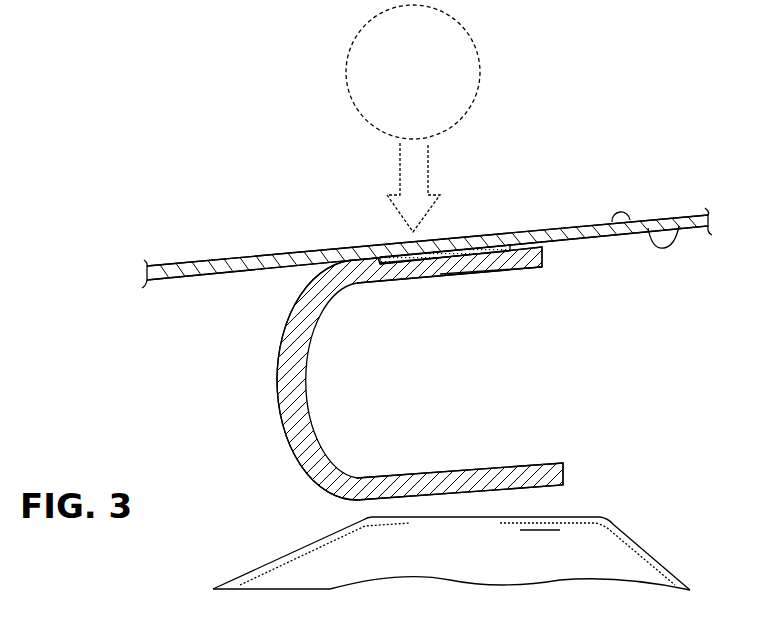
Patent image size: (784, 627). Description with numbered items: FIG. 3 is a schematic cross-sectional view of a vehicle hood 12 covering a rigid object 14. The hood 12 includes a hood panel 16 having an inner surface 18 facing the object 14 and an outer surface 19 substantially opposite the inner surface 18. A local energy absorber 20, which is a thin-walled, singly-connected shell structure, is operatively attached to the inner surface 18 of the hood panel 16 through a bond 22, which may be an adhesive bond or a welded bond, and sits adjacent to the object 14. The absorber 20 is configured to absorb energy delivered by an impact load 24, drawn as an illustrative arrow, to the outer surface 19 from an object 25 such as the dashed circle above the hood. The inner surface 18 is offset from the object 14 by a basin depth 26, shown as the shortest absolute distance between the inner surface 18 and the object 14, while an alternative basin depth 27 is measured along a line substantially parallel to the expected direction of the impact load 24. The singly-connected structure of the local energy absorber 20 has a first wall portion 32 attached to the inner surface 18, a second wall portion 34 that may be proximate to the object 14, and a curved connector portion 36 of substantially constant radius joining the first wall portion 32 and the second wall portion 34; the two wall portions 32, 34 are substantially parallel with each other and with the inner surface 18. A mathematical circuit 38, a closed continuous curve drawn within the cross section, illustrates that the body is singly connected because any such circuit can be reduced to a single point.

The vehicle hood 12 is at (200, 216).
The object 14 is at (498, 563).
The hood panel 16 is at (575, 222).
The inner surface 18 is at (677, 232).
The outer surface 19 is at (617, 226).
The local energy absorber 20 is at (260, 323).
The bond 22 is at (508, 243).
The impact load 24 is at (400, 165).
The object 25 is at (345, 75).
The basin depth 26 is at (345, 262).
The alternative basin depth 27 is at (412, 252).
The first wall portion 32 is at (517, 272).
The second wall portion 34 is at (515, 470).
The curved connector portion 36 is at (277, 408).
The mathematical circuit 38 is at (465, 275).